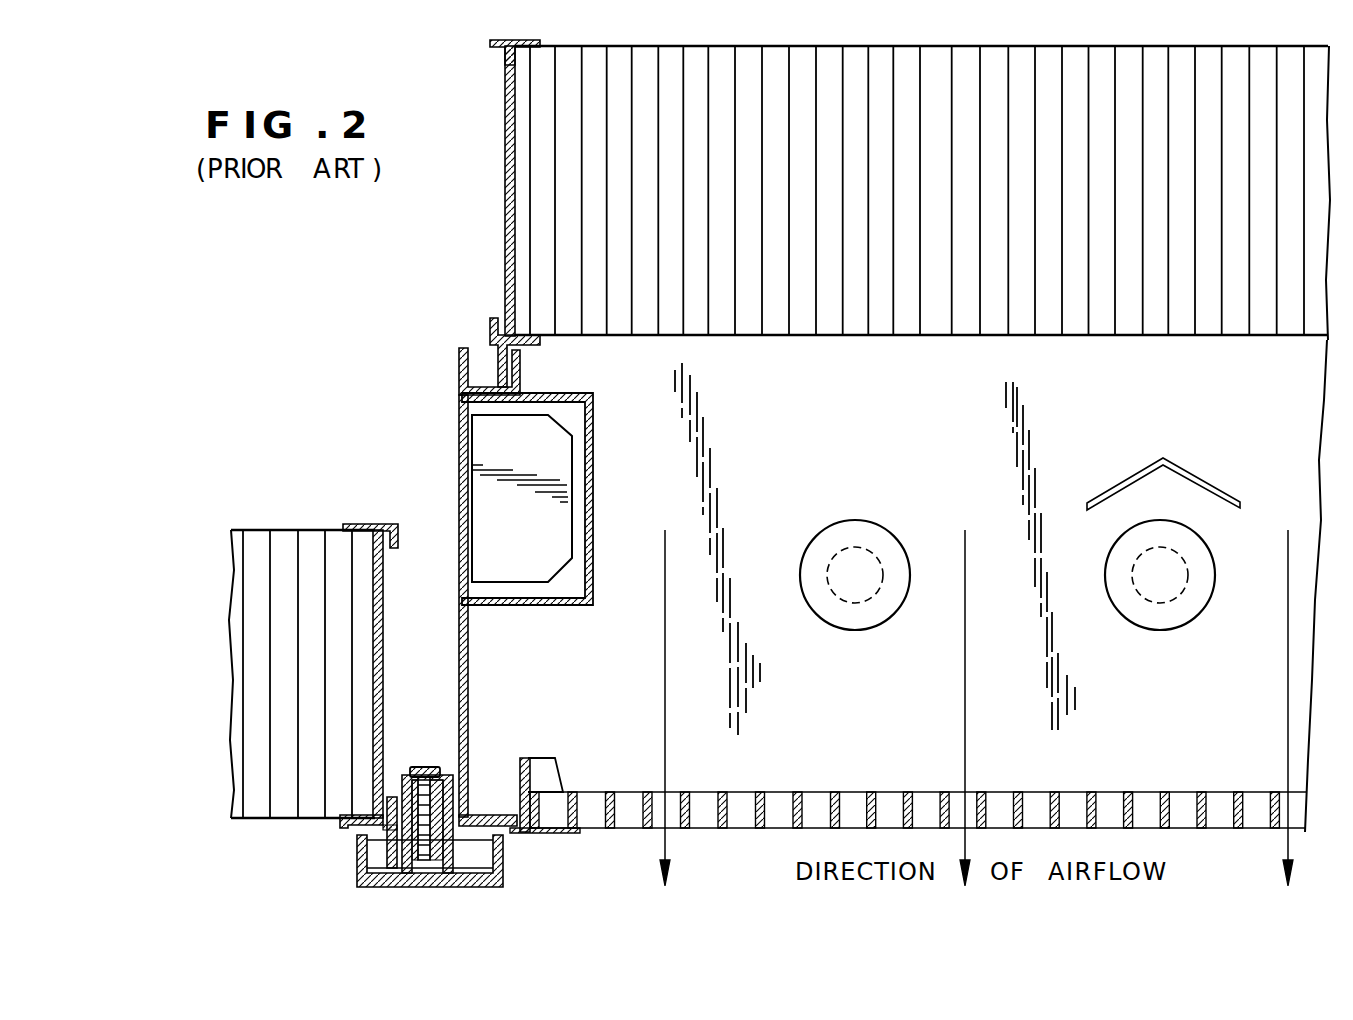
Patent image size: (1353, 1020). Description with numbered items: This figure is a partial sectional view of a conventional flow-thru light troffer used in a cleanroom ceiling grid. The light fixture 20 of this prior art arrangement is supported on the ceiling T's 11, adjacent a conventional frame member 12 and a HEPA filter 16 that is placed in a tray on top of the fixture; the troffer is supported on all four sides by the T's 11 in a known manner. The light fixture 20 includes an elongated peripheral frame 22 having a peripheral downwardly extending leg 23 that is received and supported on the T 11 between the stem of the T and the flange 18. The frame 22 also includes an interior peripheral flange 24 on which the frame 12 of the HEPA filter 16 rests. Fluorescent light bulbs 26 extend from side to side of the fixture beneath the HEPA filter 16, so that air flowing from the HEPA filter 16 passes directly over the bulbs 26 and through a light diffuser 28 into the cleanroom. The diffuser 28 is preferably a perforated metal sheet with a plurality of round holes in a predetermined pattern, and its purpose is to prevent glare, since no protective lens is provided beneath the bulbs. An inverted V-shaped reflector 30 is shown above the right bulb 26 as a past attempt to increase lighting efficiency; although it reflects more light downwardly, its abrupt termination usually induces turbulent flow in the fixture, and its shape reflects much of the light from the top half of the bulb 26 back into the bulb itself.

The ceiling T 11 is at (360, 887).
The frame member 12 is at (510, 207).
The HEPA filter 16 is at (527, 158).
The flange 18 is at (503, 843).
The light fixture 20 is at (452, 335).
The peripheral frame 22 is at (462, 470).
The downwardly extending leg 23 is at (470, 860).
The interior peripheral flange 24 is at (535, 340).
The fluorescent light bulb 26 is at (905, 595).
The light diffuser 28 is at (1185, 800).
The reflector 30 is at (1140, 470).